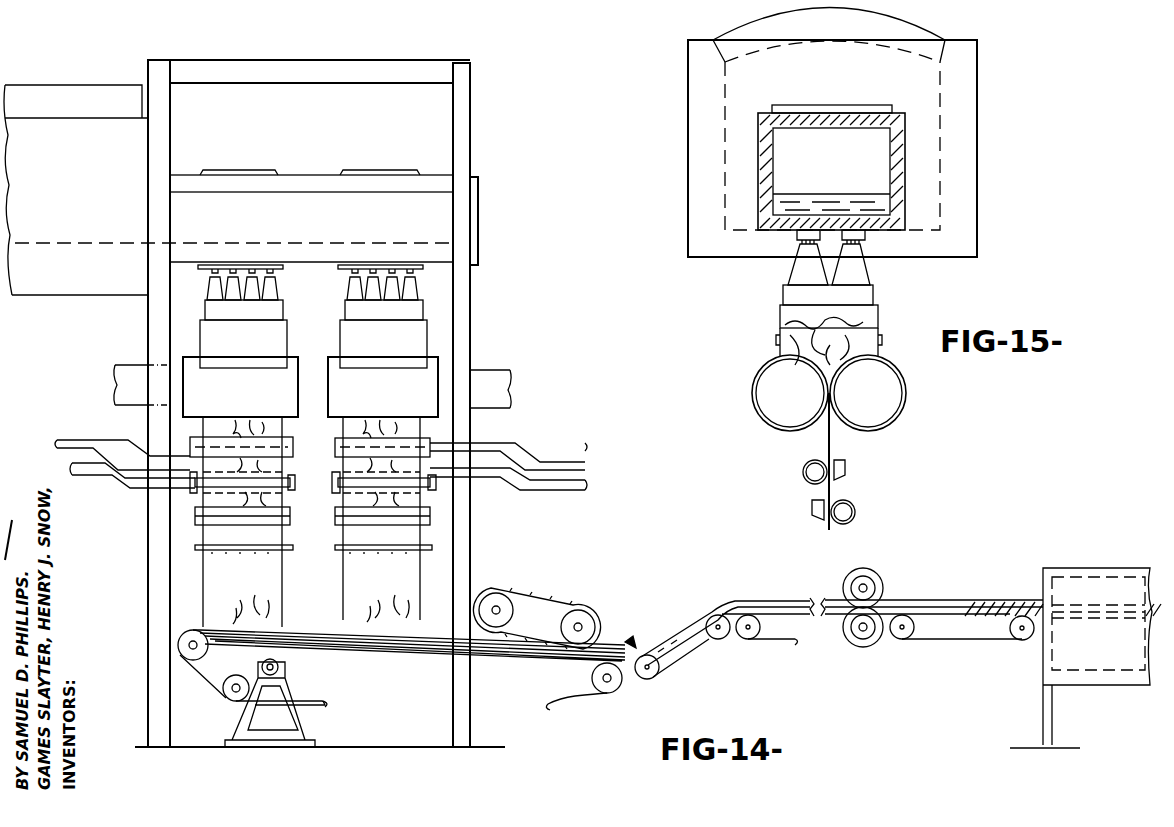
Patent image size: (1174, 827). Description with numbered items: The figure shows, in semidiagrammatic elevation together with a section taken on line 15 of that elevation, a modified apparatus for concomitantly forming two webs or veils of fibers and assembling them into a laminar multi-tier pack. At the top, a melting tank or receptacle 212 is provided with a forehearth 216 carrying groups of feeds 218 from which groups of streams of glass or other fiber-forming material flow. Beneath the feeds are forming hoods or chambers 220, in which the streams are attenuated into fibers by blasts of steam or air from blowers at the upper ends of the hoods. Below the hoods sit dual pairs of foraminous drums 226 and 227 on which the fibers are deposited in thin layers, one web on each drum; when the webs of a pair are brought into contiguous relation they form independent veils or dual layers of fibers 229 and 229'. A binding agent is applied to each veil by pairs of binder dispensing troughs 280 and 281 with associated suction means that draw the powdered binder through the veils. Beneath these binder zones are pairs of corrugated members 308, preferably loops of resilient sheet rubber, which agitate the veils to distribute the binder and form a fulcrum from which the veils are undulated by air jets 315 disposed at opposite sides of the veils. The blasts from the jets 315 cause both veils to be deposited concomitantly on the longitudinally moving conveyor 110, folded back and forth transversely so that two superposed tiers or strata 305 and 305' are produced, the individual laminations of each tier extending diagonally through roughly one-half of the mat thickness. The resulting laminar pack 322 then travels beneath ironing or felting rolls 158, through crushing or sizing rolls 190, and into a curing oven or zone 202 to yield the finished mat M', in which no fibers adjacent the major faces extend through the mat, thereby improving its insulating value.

In FIG. 14, the melting tank 212 is at (60, 128).
In FIG. 14, the section line 15— 15 is at (437, 510).
In FIG. 14, the feeds 218 is at (218, 265).
In FIG. 14, the forming hoods 220 is at (208, 287).
In FIG. 15, the forming hoods 220 is at (862, 272).
In FIG. 14, the drums 226 is at (260, 396).
In FIG. 15, the drums 226 is at (796, 426).
In FIG. 14, the drums 227 is at (400, 396).
In FIG. 14, the binder dispensing troughs 280 is at (355, 448).
In FIG. 14, the binder dispensing troughs 281 is at (358, 483).
In FIG. 14, the corrugated members 308 is at (358, 515).
In FIG. 14, the air jets 315 is at (353, 553).
In FIG. 14, the veil 229 is at (242, 586).
In FIG. 14, the veil 229' is at (380, 586).
In FIG. 14, the tier 305 is at (313, 613).
In FIG. 14, the tier 305' is at (479, 593).
In FIG. 14, the conveyor 110 is at (295, 640).
In FIG. 14, the laminar pack 322 is at (425, 640).
In FIG. 14, the ironing rolls 158 is at (535, 607).
In FIG. 14, the mat M' is at (623, 629).
In FIG. 14, the crushing rolls 190 is at (880, 578).
In FIG. 14, the curing oven 202 is at (1043, 573).
In FIG. 15, the forehearth 216 is at (905, 157).